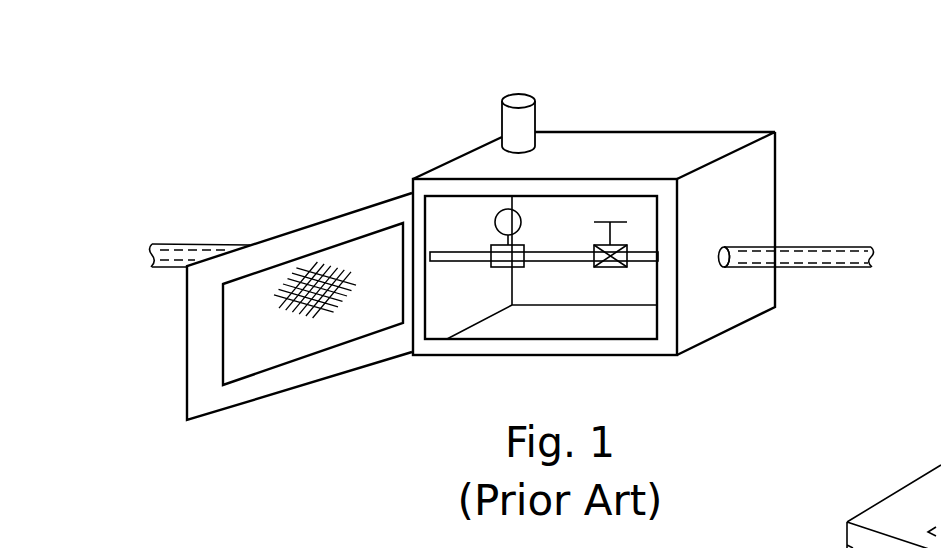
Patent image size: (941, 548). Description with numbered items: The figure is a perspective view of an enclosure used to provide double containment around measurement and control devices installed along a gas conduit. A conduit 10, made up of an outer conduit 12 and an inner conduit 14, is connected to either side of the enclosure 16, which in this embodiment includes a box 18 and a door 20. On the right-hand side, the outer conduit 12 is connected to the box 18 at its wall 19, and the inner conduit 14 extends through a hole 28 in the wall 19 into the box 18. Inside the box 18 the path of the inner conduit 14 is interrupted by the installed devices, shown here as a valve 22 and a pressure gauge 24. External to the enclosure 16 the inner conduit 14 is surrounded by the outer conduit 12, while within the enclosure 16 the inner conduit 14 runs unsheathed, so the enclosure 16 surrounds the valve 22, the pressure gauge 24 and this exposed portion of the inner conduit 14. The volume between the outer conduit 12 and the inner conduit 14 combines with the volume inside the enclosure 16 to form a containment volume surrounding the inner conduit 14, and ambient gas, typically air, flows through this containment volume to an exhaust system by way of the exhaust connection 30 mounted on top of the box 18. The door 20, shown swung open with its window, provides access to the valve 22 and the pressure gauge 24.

The conduit 10 is at (541, 244).
The outer conduit 12 is at (860, 267).
The inner conduit 14 is at (440, 262).
The enclosure 16 is at (722, 118).
The box 18 is at (639, 160).
The wall 19 is at (755, 191).
The door 20 is at (232, 397).
The valve 22 is at (613, 267).
The pressure gauge 24 is at (520, 245).
The hole 28 is at (737, 251).
The exhaust connection 30 is at (516, 123).